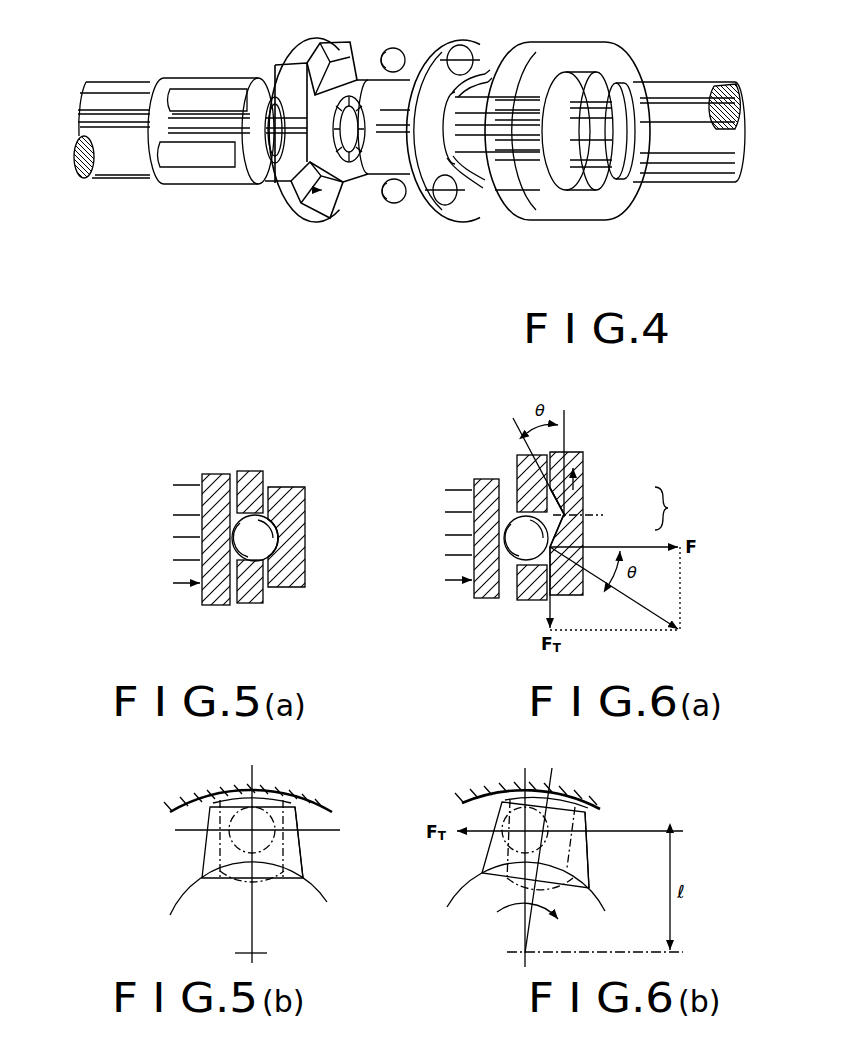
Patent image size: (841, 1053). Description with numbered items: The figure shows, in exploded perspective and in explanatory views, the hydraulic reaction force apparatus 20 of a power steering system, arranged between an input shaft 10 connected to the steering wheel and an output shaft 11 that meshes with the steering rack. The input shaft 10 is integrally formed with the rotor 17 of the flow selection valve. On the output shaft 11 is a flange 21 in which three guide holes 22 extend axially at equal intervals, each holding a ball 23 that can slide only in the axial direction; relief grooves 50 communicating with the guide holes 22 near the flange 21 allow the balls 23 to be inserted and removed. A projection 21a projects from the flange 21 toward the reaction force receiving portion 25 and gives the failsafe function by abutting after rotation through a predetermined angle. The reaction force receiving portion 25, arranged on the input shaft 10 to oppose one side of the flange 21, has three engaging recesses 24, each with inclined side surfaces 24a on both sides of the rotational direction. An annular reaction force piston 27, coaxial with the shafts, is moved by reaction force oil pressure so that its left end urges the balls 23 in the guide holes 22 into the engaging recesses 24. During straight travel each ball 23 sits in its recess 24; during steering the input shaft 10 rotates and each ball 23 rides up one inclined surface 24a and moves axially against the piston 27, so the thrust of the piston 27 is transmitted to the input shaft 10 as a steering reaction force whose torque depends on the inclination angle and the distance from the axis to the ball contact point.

In FIG. 4, the input shaft 10 is at (138, 93).
In FIG. 4, the output shaft 11 is at (697, 90).
In FIG. 4, the rotor 17 is at (232, 85).
In FIG. 4, the hydraulic reaction force apparatus 20 is at (438, 36).
In FIG. 4, the flange 21 is at (500, 57).
In FIG. 5A, the flange 21 is at (257, 483).
In FIG. 6A, the flange 21 is at (531, 583).
In FIG. 4, the projection 21a is at (378, 137).
In FIG. 4, the guide holes 22 is at (467, 56).
In FIG. 5A, the guide holes 22 is at (262, 558).
In FIG. 6A, the guide holes 22 is at (515, 563).
In FIG. 4, the balls 23 is at (395, 48).
In FIG. 5A, the balls 23 is at (262, 545).
In FIG. 6A, the balls 23 is at (518, 532).
In FIG. 5B, the balls 23 is at (270, 813).
In FIG. 6B, the balls 23 is at (500, 845).
In FIG. 4, the engaging recesses 24 is at (318, 204).
In FIG. 6A, the engaging recesses 24 is at (670, 508).
In FIG. 5B, the engaging recesses 24 is at (292, 853).
In FIG. 6B, the engaging recesses 24 is at (568, 825).
In FIG. 4, the inclined side surfaces 24a is at (320, 67).
In FIG. 5A, the inclined side surfaces 24a is at (275, 522).
In FIG. 6A, the inclined side surfaces 24a is at (560, 503).
In FIG. 4, the reaction force receiving portion 25 is at (283, 193).
In FIG. 5A, the reaction force receiving portion 25 is at (293, 512).
In FIG. 6A, the reaction force receiving portion 25 is at (580, 457).
In FIG. 5B, the reaction force receiving portion 25 is at (210, 850).
In FIG. 6B, the reaction force receiving portion 25 is at (582, 858).
In FIG. 4, the reaction force piston 27 is at (560, 42).
In FIG. 5A, the reaction force piston 27 is at (222, 483).
In FIG. 6A, the reaction force piston 27 is at (487, 478).
In FIG. 4, the relief grooves 50 is at (487, 72).